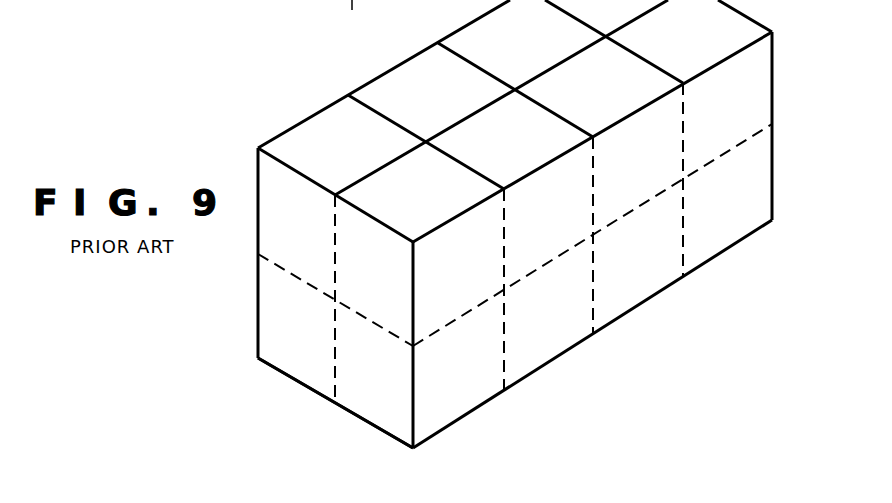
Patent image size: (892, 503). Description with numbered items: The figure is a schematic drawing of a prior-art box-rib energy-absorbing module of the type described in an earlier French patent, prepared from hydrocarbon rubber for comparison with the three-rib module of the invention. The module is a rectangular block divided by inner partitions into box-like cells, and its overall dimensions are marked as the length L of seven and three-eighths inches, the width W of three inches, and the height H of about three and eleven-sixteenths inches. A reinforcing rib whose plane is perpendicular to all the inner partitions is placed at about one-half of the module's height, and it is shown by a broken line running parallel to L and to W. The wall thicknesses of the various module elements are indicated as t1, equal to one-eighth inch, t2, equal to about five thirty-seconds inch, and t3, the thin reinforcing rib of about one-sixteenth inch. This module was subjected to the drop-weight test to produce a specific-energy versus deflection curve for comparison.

The thickness of inner partition t1 is at (352, 133).
The thickness of outer wall t2 is at (518, 153).
The thickness of reinforcing rib t3 is at (455, 324).
The height H is at (808, 10).
The width W is at (413, 487).
The length L is at (772, 224).